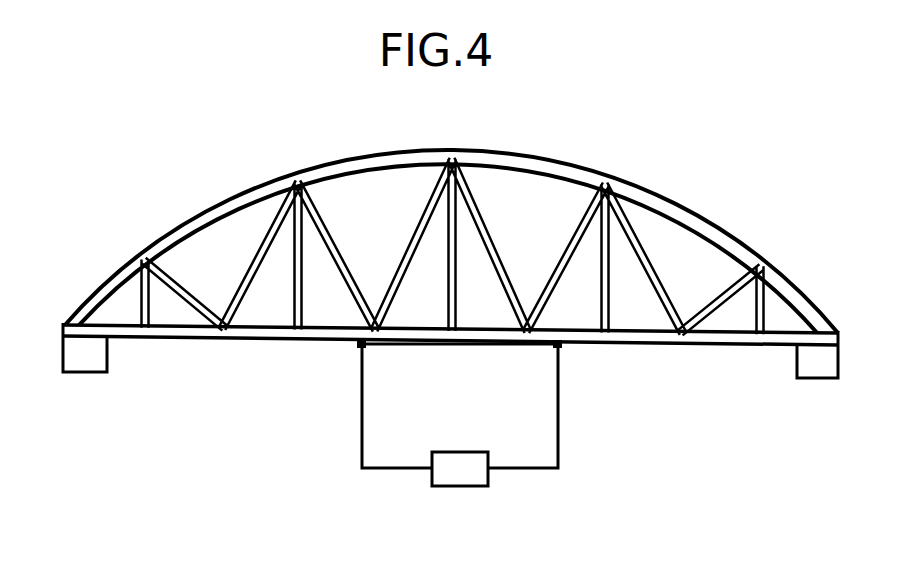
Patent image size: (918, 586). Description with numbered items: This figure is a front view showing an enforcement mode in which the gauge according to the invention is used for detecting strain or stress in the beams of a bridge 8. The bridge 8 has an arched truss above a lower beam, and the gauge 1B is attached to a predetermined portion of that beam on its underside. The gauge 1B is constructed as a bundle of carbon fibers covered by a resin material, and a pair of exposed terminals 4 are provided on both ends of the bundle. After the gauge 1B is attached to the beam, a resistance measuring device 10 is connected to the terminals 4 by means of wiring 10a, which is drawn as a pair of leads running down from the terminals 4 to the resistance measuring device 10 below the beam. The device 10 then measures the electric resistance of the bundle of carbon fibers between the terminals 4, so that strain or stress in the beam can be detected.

The bridge 8 is at (256, 187).
The terminals 4 is at (358, 348).
The gauge 1B is at (463, 347).
The wiring 10a is at (362, 455).
The resistance measuring device 10 is at (468, 478).